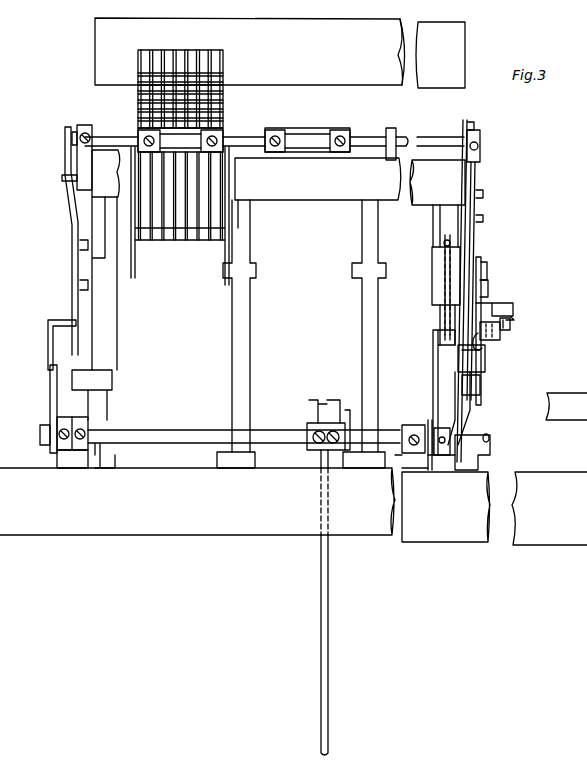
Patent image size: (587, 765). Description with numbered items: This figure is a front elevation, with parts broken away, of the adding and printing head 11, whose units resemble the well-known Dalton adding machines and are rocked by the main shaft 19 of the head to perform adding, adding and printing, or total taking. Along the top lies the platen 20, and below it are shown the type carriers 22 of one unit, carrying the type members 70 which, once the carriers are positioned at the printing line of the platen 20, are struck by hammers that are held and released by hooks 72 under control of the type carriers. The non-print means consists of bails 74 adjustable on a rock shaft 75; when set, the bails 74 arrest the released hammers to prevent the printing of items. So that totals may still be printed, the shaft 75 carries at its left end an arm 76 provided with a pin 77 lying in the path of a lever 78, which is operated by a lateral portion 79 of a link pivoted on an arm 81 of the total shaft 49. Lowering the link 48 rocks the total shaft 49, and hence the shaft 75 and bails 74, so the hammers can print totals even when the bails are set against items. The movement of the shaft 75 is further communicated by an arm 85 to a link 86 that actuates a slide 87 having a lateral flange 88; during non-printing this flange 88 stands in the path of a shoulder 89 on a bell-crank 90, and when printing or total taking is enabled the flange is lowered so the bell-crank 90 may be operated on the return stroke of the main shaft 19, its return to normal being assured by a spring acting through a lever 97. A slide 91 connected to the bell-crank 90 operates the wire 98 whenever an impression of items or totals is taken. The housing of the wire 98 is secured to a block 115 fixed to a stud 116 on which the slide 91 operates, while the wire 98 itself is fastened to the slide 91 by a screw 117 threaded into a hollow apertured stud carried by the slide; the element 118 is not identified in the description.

The adding and printing head 11 is at (341, 313).
The main shaft 19 is at (484, 443).
The platen 20 is at (280, 53).
The type carriers 22 is at (215, 58).
The link 48 is at (328, 588).
The total shaft 49 is at (165, 431).
The type members 70 is at (223, 104).
The hooks 72 is at (213, 184).
The bails 74 is at (141, 137).
The shaft 75 is at (104, 136).
The arm 76 is at (78, 157).
The pin 77 is at (62, 178).
The lever 78 is at (68, 213).
The lateral portion 79 is at (57, 320).
The arm 81 is at (52, 404).
The arm 85 is at (466, 126).
The link 86 is at (476, 182).
The slide 87 is at (458, 410).
The lateral flange 88 is at (470, 410).
The shoulder 89 is at (478, 384).
The bell-crank 90 is at (470, 352).
The slide 91 is at (478, 327).
The lever 97 is at (483, 263).
The wire 98 is at (482, 340).
The block 115 is at (487, 300).
The stud 116 is at (494, 303).
The screw 117 is at (510, 322).
The block 118 is at (498, 332).